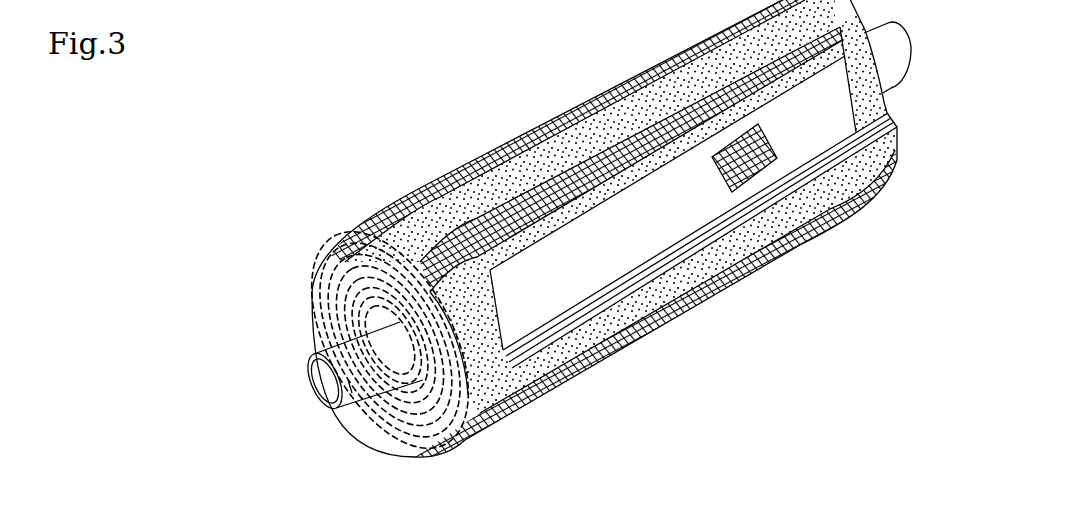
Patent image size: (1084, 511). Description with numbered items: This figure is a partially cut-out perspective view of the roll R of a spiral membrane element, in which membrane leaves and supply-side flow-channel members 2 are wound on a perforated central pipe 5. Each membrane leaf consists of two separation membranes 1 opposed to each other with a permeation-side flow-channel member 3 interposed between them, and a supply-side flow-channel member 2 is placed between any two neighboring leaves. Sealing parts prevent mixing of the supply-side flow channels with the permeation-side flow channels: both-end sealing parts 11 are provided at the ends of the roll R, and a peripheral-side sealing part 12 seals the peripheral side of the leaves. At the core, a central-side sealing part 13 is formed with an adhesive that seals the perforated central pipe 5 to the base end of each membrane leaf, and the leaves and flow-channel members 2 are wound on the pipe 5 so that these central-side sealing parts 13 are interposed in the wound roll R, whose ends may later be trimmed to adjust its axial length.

The roll R is at (343, 219).
The separation membrane 1 is at (502, 160).
The supply-side flow-channel member 2 is at (477, 213).
The permeation-side flow-channel member 3 is at (778, 188).
The perforated central pipe 5 is at (348, 410).
The both-end sealing part 11 is at (882, 93).
The peripheral-side sealing part 12 is at (610, 82).
The central-side sealing part 13 is at (316, 325).